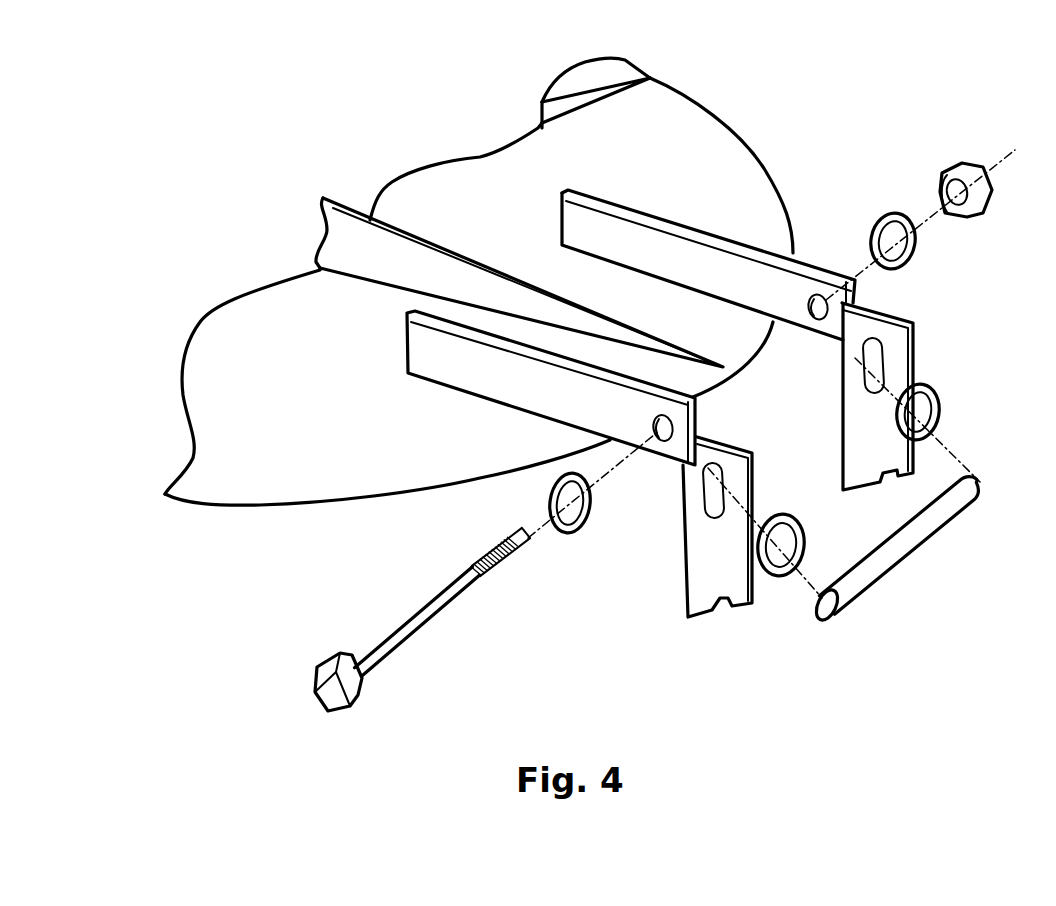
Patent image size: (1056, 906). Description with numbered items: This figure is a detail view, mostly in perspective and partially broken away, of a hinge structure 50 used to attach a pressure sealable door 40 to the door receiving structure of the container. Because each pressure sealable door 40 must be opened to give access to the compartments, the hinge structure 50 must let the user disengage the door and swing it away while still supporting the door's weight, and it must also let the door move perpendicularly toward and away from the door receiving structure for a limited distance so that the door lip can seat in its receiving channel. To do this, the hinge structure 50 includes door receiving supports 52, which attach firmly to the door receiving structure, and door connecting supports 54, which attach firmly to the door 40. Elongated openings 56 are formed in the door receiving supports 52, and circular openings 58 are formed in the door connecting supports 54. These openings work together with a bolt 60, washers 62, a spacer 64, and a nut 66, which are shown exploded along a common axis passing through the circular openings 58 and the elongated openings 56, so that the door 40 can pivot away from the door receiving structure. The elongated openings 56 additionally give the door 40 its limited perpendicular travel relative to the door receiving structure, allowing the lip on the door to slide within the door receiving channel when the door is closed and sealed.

The pressure sealable door 40 is at (479, 281).
The hinge structure 50 is at (810, 113).
The door receiving support 52 is at (842, 439).
The door connecting support 54 is at (660, 222).
The elongated opening 56 is at (862, 371).
The circular opening 58 is at (807, 303).
The bolt 60 is at (408, 616).
The washer 62 is at (880, 221).
The spacer 64 is at (924, 551).
The nut 66 is at (950, 166).